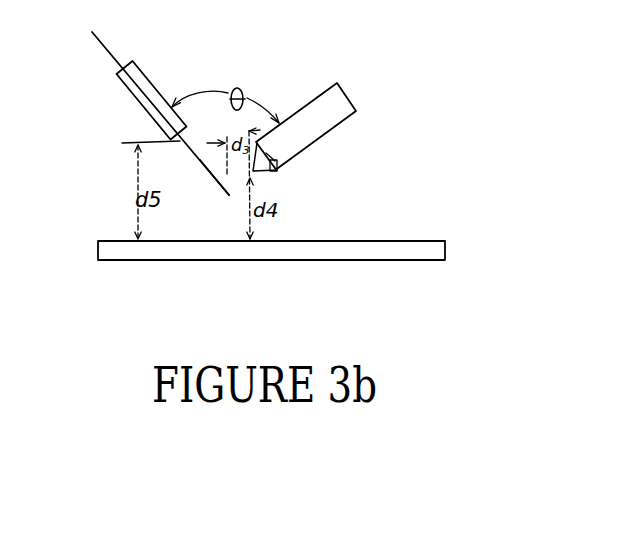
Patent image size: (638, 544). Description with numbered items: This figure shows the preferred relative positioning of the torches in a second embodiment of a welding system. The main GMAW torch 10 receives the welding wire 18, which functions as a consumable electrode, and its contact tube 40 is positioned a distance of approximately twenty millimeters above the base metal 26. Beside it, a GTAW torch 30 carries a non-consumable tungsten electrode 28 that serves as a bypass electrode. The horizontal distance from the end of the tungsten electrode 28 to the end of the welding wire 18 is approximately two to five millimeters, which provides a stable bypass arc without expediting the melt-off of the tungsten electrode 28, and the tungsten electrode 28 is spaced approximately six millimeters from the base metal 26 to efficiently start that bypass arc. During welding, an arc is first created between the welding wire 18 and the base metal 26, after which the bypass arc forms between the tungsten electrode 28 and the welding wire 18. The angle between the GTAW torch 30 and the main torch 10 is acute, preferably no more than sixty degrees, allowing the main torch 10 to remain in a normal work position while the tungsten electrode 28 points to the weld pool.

The main GMAW torch 10 is at (143, 87).
The contact tube 40 is at (157, 120).
The welding wire 18 is at (200, 160).
The GTAW torch 30 is at (301, 108).
The tungsten electrode 28 is at (274, 172).
The base metal 26 is at (386, 242).